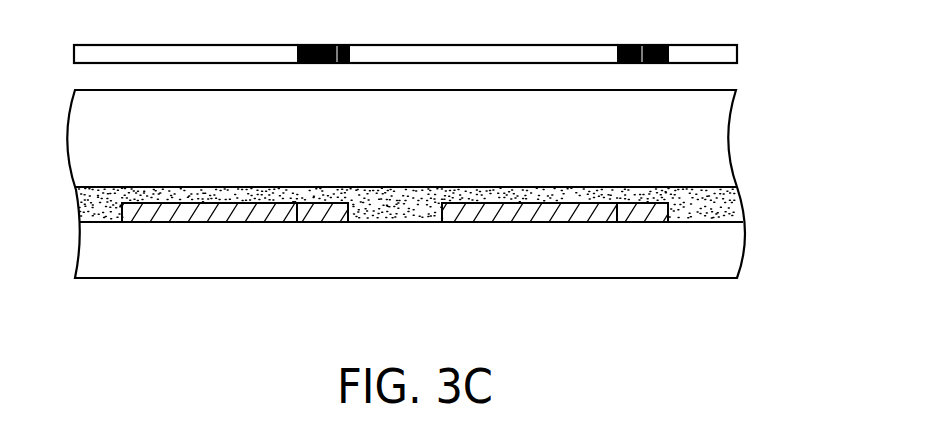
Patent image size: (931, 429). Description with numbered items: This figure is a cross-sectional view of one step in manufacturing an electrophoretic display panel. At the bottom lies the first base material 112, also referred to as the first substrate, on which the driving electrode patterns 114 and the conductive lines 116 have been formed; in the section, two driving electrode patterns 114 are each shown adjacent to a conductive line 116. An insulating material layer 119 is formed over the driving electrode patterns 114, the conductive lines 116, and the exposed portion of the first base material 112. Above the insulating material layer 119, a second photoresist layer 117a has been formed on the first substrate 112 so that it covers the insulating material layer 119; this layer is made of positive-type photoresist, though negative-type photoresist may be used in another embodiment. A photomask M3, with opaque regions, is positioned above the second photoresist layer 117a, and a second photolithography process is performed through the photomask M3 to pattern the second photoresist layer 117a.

The photomask M3 is at (742, 57).
The first base material 112 is at (722, 242).
The driving electrode patterns 114 is at (217, 208).
The conductive lines 116 is at (320, 208).
The second photoresist layer 117a is at (723, 137).
The insulating material layer 119 is at (722, 203).